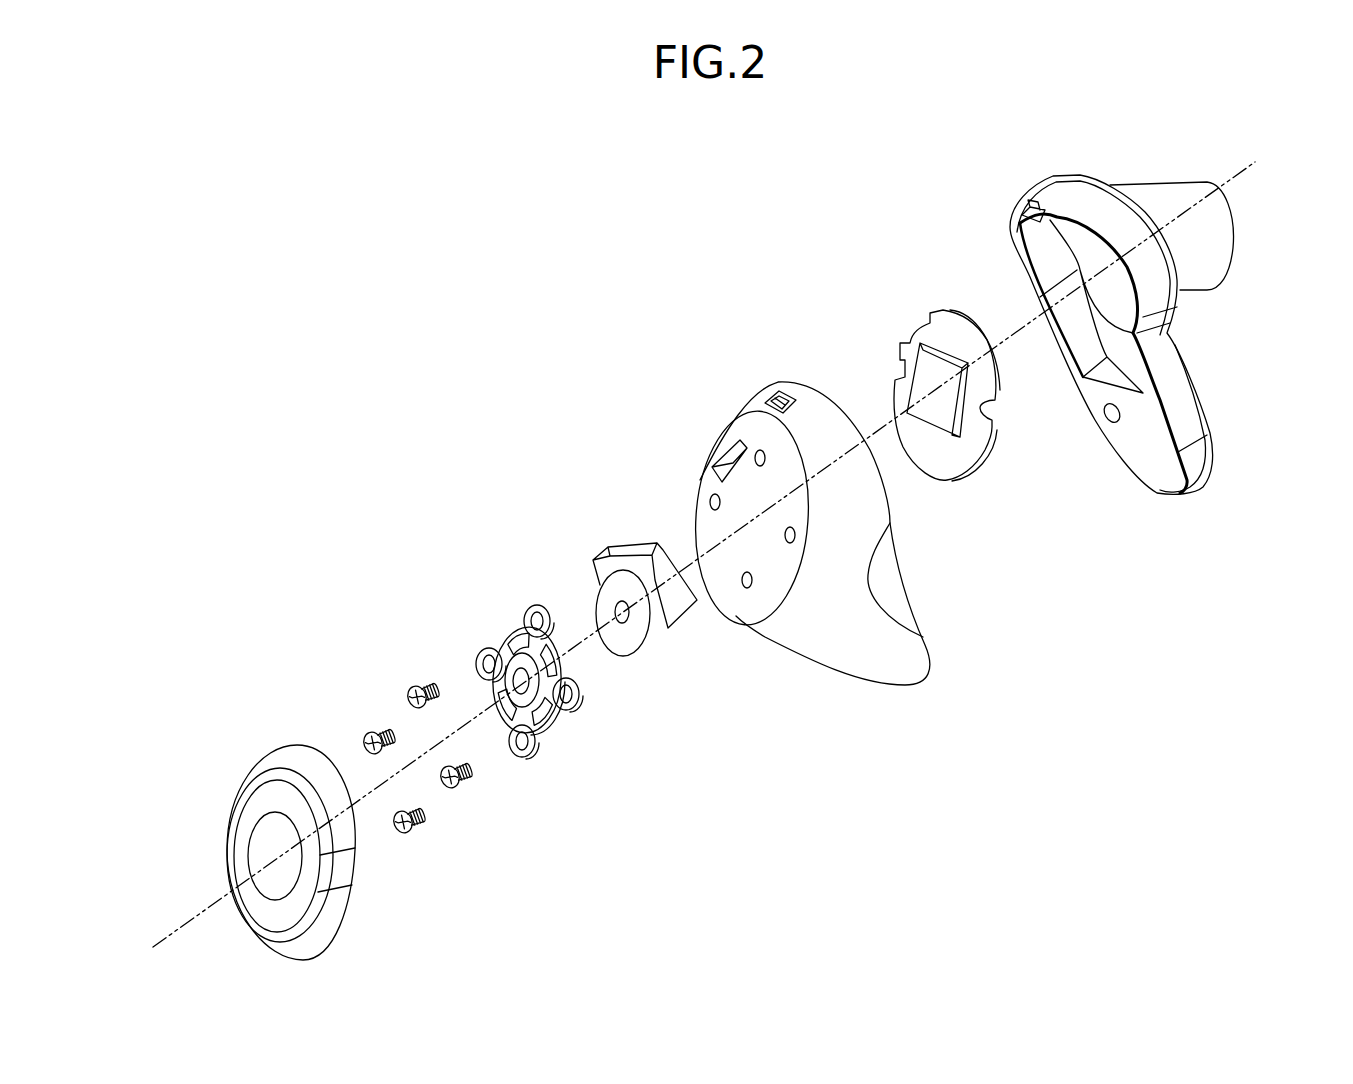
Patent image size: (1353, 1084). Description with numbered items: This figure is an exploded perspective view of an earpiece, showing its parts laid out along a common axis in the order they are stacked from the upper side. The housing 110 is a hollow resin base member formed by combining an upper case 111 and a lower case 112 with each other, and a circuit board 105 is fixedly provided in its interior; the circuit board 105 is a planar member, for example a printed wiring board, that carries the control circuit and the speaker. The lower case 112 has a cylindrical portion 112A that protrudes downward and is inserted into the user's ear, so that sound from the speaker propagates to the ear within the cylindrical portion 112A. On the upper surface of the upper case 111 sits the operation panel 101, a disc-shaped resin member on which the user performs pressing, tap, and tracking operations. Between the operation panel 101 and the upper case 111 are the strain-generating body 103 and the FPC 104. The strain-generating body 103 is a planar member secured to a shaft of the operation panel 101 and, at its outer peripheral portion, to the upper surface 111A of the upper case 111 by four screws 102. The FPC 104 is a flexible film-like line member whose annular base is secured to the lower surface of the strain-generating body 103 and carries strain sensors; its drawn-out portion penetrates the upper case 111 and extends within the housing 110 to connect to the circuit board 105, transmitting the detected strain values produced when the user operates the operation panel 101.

The operation panel 101 is at (270, 748).
The screws 102 is at (413, 682).
The strain-generating body 103 is at (508, 630).
The flexible printed circuit (FPC) 104 is at (622, 545).
The circuit board 105 is at (920, 333).
The housing 110 is at (904, 392).
The upper case 111 is at (753, 395).
The upper surface 111A is at (700, 487).
The lower case 112 is at (1050, 297).
The cylindrical portion 112A is at (1168, 182).